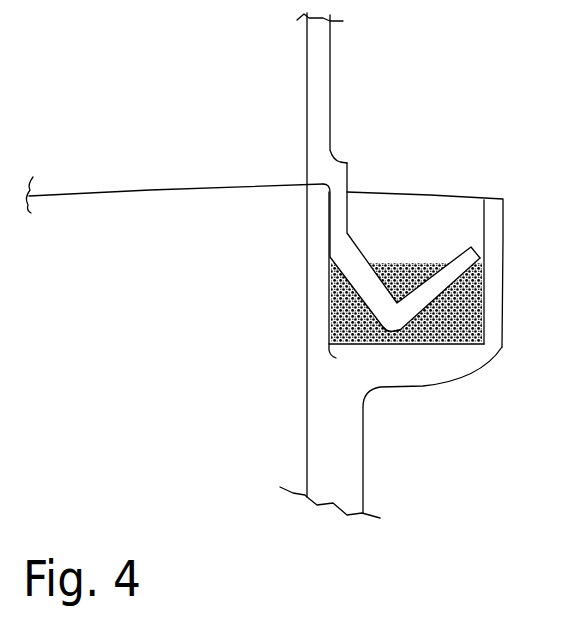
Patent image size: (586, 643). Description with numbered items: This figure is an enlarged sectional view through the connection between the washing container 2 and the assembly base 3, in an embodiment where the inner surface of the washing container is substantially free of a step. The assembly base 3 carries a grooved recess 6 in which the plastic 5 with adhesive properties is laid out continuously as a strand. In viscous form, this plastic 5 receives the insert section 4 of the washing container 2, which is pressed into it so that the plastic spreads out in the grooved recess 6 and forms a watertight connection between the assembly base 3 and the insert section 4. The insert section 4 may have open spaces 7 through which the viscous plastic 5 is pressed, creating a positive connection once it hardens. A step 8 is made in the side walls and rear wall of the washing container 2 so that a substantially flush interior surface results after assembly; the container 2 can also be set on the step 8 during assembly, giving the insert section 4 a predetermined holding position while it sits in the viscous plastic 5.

The washing container 2 is at (322, 75).
The assembly base 3 is at (343, 462).
The insert section 4 is at (390, 307).
The plastic with adhesive properties 5 is at (478, 293).
The grooved recess 6 is at (415, 245).
The open spaces 7 is at (478, 335).
The step 8 is at (328, 168).